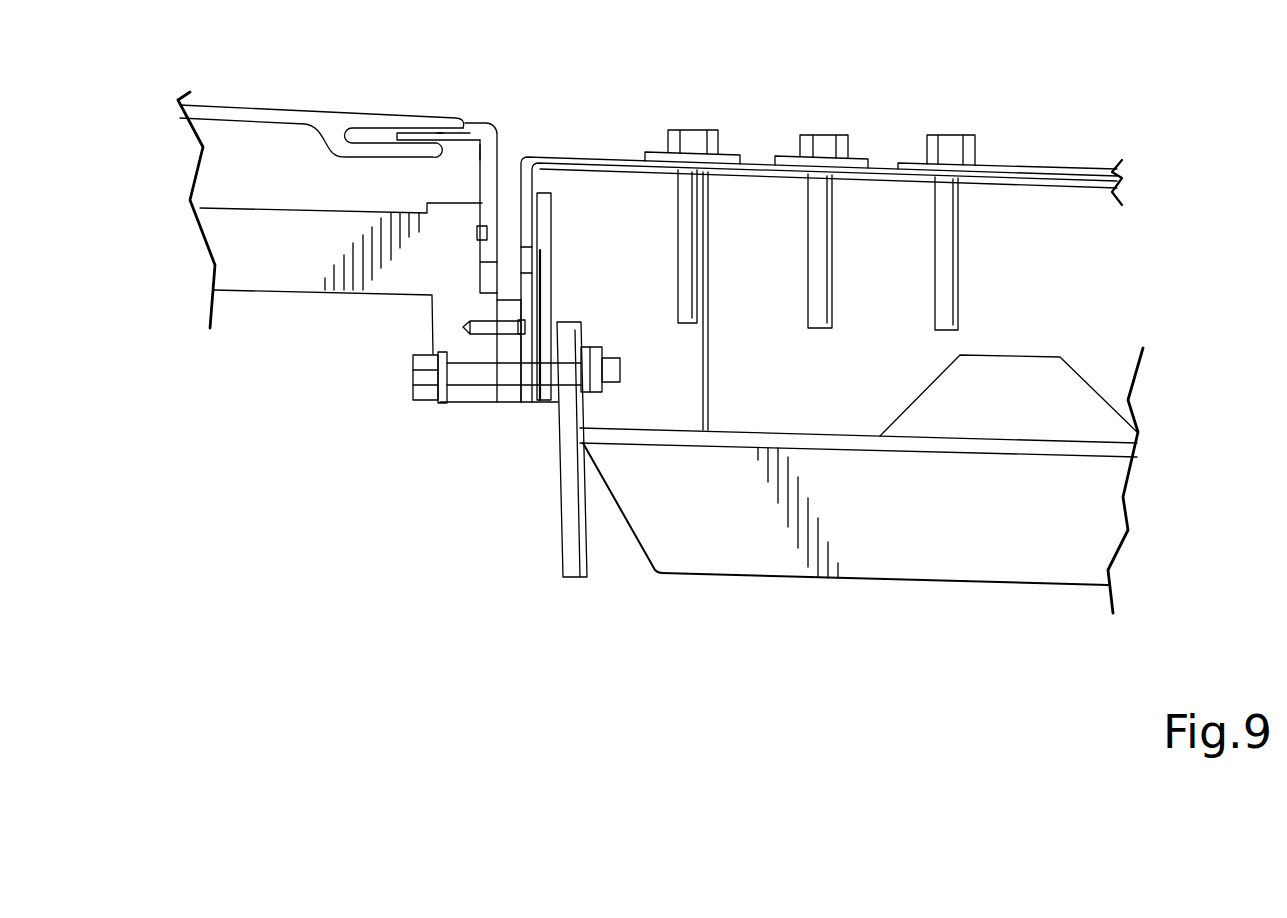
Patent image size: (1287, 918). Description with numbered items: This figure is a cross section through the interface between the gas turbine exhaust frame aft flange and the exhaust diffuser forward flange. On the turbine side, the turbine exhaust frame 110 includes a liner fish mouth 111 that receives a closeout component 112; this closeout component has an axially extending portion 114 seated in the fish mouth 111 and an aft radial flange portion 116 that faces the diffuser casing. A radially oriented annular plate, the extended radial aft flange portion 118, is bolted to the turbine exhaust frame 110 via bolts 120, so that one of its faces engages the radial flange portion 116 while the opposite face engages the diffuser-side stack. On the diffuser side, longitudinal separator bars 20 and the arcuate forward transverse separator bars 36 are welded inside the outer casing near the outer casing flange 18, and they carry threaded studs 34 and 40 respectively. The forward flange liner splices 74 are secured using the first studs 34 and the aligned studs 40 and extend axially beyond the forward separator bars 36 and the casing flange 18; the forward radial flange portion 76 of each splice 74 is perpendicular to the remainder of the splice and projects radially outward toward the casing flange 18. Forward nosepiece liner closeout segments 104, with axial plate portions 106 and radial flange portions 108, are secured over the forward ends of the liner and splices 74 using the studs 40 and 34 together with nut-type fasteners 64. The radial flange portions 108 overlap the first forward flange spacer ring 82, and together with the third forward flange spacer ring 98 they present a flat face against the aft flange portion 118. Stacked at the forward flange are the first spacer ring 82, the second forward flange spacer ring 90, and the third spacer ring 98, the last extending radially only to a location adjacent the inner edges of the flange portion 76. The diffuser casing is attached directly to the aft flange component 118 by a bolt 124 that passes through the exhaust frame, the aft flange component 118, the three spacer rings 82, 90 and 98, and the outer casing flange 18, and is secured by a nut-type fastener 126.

The outer casing flange 18 is at (567, 550).
The separator bars 20 is at (768, 278).
The threaded studs 34 is at (817, 248).
The forward transverse separator bars 36 is at (702, 350).
The threaded studs 40 is at (688, 203).
The nut-type fasteners 64 is at (692, 138).
The forward flange liner splices 74 is at (583, 162).
The forward radial flange portion 76 is at (530, 205).
The first forward flange spacer ring 82 is at (543, 215).
The second forward flange spacer ring 90 is at (537, 317).
The third forward flange spacer ring 98 is at (535, 393).
The forward nosepiece liner closeout segments 104 is at (767, 155).
The axial plate portions 106 is at (622, 162).
The radial flange portions 108 is at (525, 187).
The turbine exhaust frame 110 is at (338, 103).
The liner fish mouth 111 is at (370, 117).
The closeout component 112 is at (496, 116).
The axially extending portion 114 is at (443, 133).
The aft radial flange portion 116 is at (485, 152).
The extended radial aft flange portion 118 is at (490, 233).
The bolts 120 is at (403, 283).
The bolt 124 is at (468, 377).
The nut-type fasteners 126 is at (590, 352).